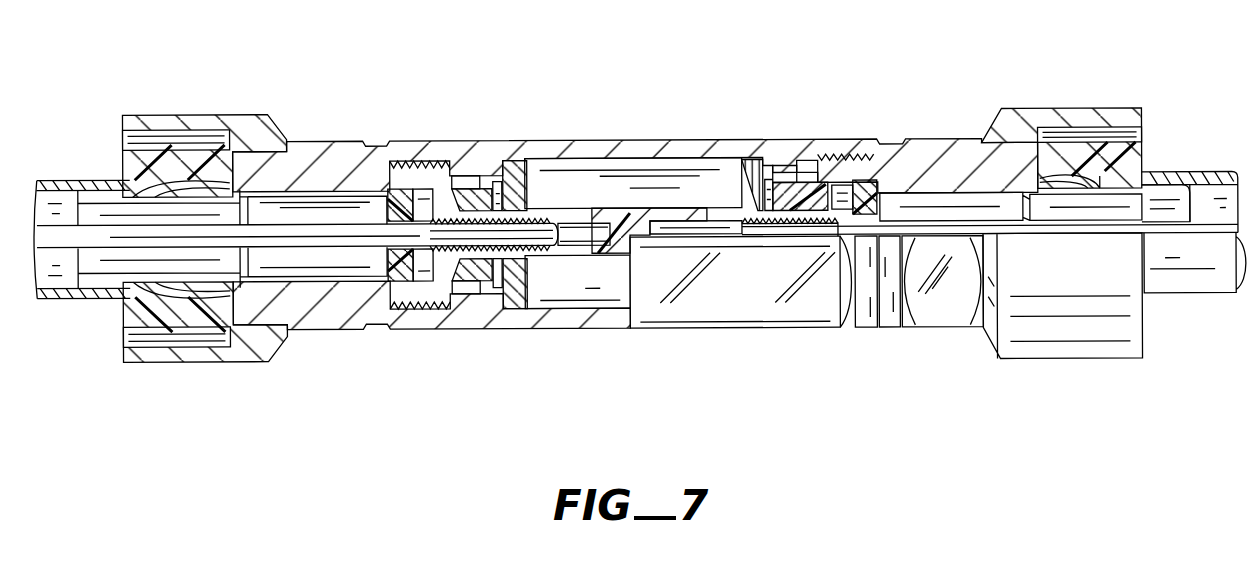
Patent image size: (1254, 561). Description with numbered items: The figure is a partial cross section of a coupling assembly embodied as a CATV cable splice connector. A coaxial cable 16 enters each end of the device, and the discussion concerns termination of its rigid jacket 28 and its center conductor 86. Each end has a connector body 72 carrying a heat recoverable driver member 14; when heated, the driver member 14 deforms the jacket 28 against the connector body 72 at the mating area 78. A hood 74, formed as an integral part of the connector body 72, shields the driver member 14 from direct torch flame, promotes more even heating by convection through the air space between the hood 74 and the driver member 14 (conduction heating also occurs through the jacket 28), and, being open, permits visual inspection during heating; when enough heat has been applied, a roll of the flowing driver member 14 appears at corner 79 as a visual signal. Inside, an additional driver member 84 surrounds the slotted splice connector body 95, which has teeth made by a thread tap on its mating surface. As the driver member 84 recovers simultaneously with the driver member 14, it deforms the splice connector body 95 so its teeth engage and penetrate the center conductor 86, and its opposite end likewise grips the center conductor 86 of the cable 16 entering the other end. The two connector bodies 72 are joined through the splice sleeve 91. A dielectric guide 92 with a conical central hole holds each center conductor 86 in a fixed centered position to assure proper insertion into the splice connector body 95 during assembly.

The driver member 14 is at (148, 152).
The coaxial cable 16 is at (97, 301).
The jacket 28 is at (62, 299).
The connector body 72 is at (347, 331).
The hood 74 is at (217, 363).
The mating area 78 is at (170, 186).
The corner 79 is at (128, 185).
The driver member 84 is at (472, 186).
The center conductor 86 is at (487, 238).
The splice sleeve 91 is at (620, 332).
The guide 92 is at (402, 196).
The splice connector body 95 is at (765, 225).